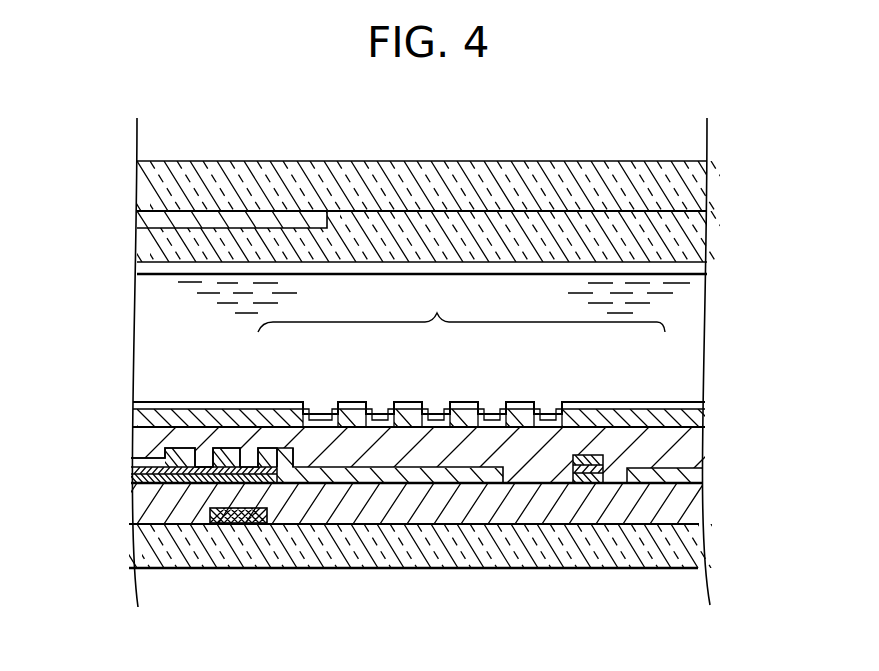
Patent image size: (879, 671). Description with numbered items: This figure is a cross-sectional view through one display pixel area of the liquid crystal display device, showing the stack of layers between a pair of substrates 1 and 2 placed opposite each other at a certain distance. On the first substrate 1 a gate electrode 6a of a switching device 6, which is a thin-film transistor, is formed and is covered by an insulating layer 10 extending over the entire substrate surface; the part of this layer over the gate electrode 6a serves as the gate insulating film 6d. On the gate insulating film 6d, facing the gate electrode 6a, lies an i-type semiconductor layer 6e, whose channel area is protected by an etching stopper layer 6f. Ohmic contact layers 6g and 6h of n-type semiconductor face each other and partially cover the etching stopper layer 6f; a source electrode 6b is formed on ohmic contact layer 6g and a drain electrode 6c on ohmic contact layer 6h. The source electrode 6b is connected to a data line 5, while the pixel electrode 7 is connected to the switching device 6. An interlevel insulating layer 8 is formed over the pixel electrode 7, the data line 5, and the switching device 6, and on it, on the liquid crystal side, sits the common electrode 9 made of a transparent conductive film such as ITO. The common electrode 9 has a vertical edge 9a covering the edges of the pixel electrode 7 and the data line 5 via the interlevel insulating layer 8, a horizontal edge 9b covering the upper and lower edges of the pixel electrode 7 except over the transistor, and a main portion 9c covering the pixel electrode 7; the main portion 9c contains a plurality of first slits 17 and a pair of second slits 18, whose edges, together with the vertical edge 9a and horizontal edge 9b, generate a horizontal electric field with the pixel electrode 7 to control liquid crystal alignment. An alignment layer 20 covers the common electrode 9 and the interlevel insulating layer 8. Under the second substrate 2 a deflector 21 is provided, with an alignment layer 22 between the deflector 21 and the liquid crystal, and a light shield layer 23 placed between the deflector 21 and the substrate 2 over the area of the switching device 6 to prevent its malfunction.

The first substrate 1 is at (690, 551).
The second substrate 2 is at (693, 188).
The data line 5 is at (607, 459).
The switching device 6 is at (156, 490).
The gate electrode 6a is at (240, 516).
The source electrode 6b is at (150, 457).
The drain electrode 6c is at (231, 458).
The gate insulating film 6d is at (137, 517).
The i-type semiconductor layer 6e is at (132, 480).
The etching stopper layer 6f is at (206, 467).
The ohmic contact layer 6g is at (134, 470).
The ohmic contact layer 6h is at (273, 470).
The pixel electrode 7 is at (430, 476).
The interlevel insulating layer 8 is at (688, 458).
The common electrode 9 is at (461, 309).
The vertical edge 9a is at (640, 420).
The horizontal edge 9b is at (287, 420).
The main portion 9c is at (520, 418).
The insulating layer 10 is at (688, 508).
The first slit 17 is at (489, 402).
The second slit 18 is at (545, 411).
The alignment layer 20 is at (705, 404).
The deflector 21 is at (693, 238).
The alignment layer 22 is at (693, 272).
The light shield layer 23 is at (148, 218).